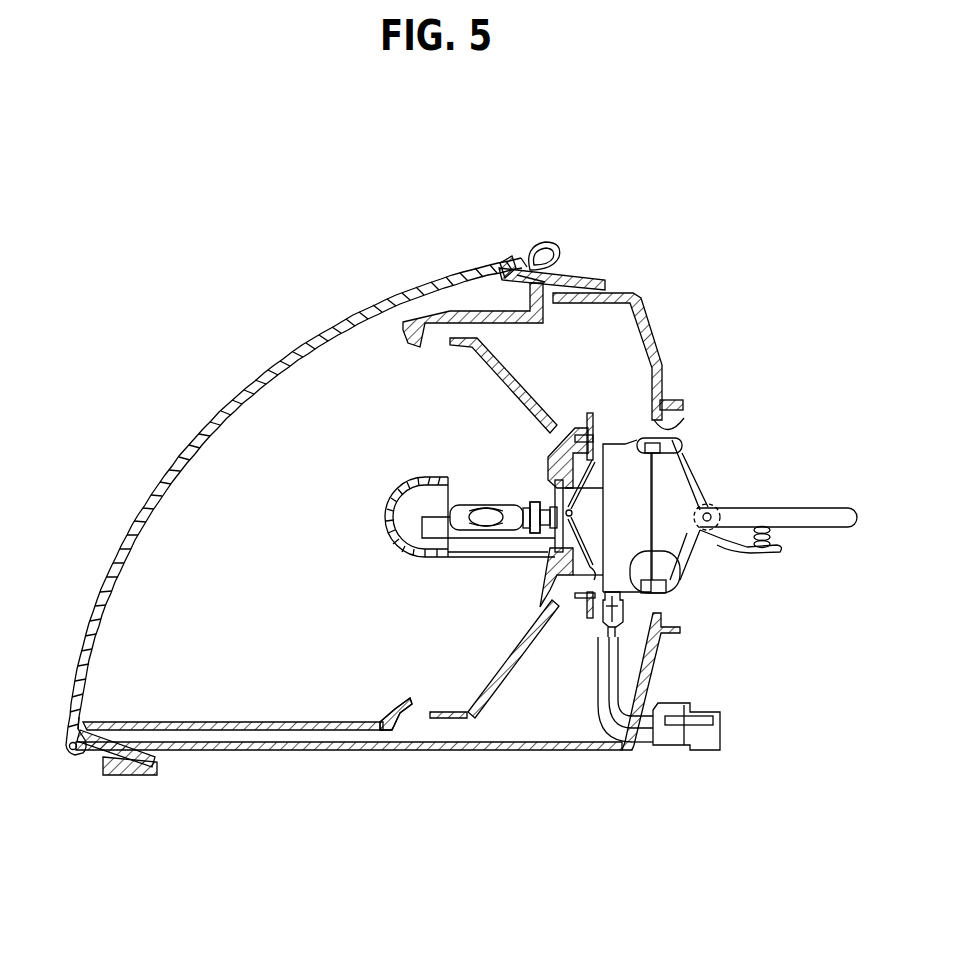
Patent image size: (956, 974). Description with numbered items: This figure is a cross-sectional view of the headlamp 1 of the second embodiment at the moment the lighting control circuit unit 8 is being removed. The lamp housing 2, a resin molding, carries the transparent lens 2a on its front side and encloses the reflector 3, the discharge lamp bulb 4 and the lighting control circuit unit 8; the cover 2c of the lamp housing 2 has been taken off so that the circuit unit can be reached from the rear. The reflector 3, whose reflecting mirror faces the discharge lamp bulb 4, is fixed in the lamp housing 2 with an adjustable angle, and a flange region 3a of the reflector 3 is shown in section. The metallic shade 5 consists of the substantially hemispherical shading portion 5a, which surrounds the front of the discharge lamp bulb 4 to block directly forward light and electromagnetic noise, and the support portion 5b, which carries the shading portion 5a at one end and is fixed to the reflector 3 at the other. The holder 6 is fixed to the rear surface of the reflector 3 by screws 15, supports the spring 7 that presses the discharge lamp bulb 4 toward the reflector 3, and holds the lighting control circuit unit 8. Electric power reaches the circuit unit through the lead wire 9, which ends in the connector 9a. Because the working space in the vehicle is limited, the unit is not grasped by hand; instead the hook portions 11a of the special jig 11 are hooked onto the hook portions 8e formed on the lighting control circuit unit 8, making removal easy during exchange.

The headlamp 1 is at (108, 236).
The lamp housing 2 is at (183, 425).
The transparent lens 2a is at (207, 427).
The cover 2c is at (672, 413).
The reflector 3 is at (451, 726).
The reflector flange 3a is at (497, 680).
The discharge lamp bulb 4 is at (440, 477).
The shade 5 is at (430, 550).
The shading portion 5a is at (413, 477).
The support portion 5b is at (498, 557).
The holder 6 is at (607, 440).
The spring 7 is at (482, 505).
The lighting control circuit unit 8 is at (618, 430).
The hook portions 8e is at (640, 440).
The lead wire 9 is at (603, 668).
The connector 9a is at (667, 733).
The jig 11 is at (772, 508).
The hook portions 11a is at (678, 440).
The screws 15 is at (600, 420).